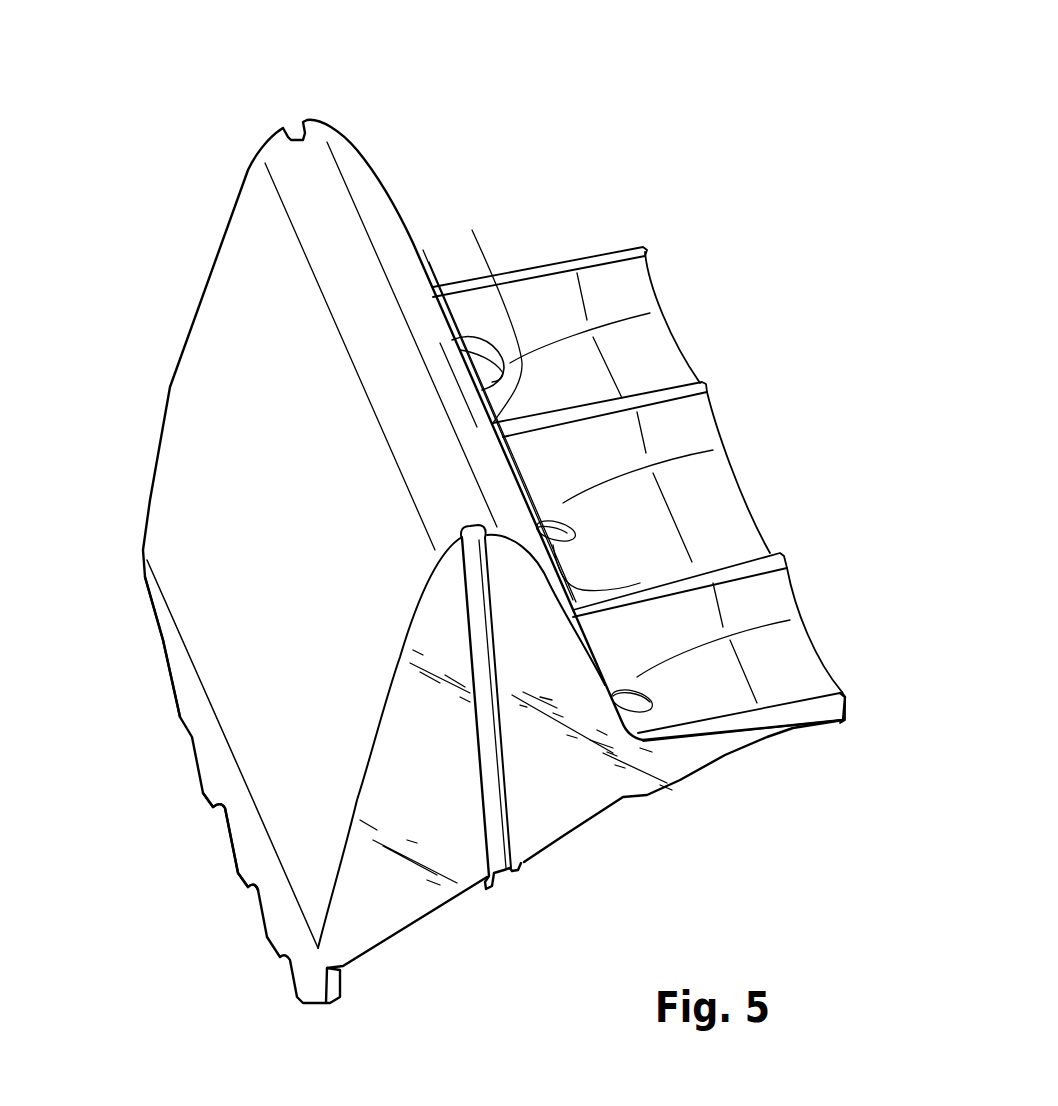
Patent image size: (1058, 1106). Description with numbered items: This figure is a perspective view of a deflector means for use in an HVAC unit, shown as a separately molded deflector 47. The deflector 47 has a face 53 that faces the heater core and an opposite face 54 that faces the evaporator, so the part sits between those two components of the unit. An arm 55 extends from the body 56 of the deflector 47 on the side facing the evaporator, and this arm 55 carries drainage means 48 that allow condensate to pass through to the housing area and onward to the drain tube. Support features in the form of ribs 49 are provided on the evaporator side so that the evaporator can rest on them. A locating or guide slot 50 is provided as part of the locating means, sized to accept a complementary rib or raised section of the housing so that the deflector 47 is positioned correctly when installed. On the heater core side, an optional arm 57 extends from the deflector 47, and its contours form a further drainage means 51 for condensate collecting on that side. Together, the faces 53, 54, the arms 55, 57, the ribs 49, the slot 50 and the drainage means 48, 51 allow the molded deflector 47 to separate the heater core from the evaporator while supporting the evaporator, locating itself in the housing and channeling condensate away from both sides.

The deflector 47 is at (153, 150).
The drainage means 48 is at (483, 372).
The ribs 49 is at (740, 392).
The locating or guide slot 50 is at (286, 110).
The drainage means 51 is at (238, 892).
The face 53 is at (268, 338).
The face 54 is at (510, 320).
The arm 55 is at (852, 652).
The body 56 is at (548, 767).
The optional arm 57 is at (125, 678).